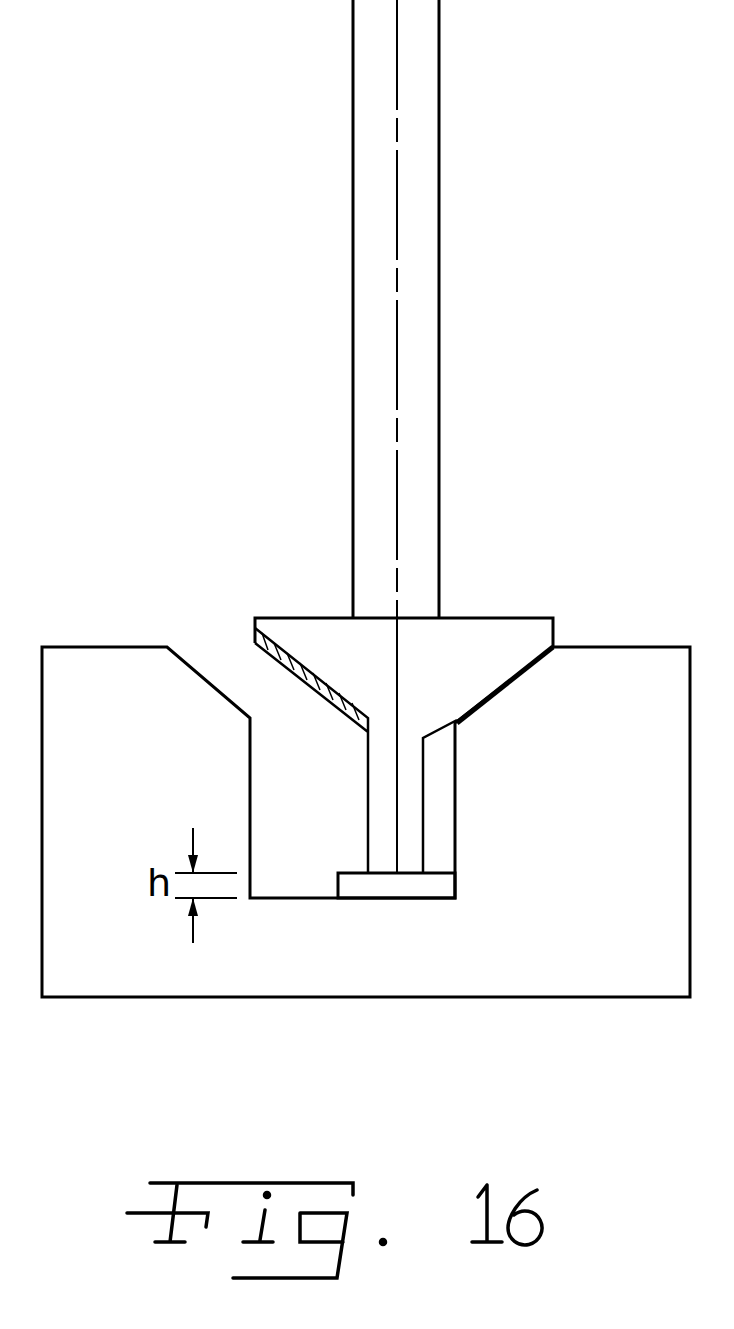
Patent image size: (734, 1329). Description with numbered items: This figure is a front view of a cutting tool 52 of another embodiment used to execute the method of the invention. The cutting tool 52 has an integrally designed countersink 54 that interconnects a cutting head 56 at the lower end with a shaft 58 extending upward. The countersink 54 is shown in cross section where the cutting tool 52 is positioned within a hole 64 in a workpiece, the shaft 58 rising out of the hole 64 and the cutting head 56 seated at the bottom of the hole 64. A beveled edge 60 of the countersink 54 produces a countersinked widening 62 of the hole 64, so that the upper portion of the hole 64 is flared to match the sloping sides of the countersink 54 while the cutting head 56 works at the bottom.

The cutting tool 52 is at (407, 436).
The countersink 54 is at (540, 628).
The cutting head 56 is at (393, 888).
The shaft 58 is at (422, 472).
The beveled edge 60 is at (288, 672).
The countersinked widening 62 is at (513, 680).
The hole 64 is at (287, 875).